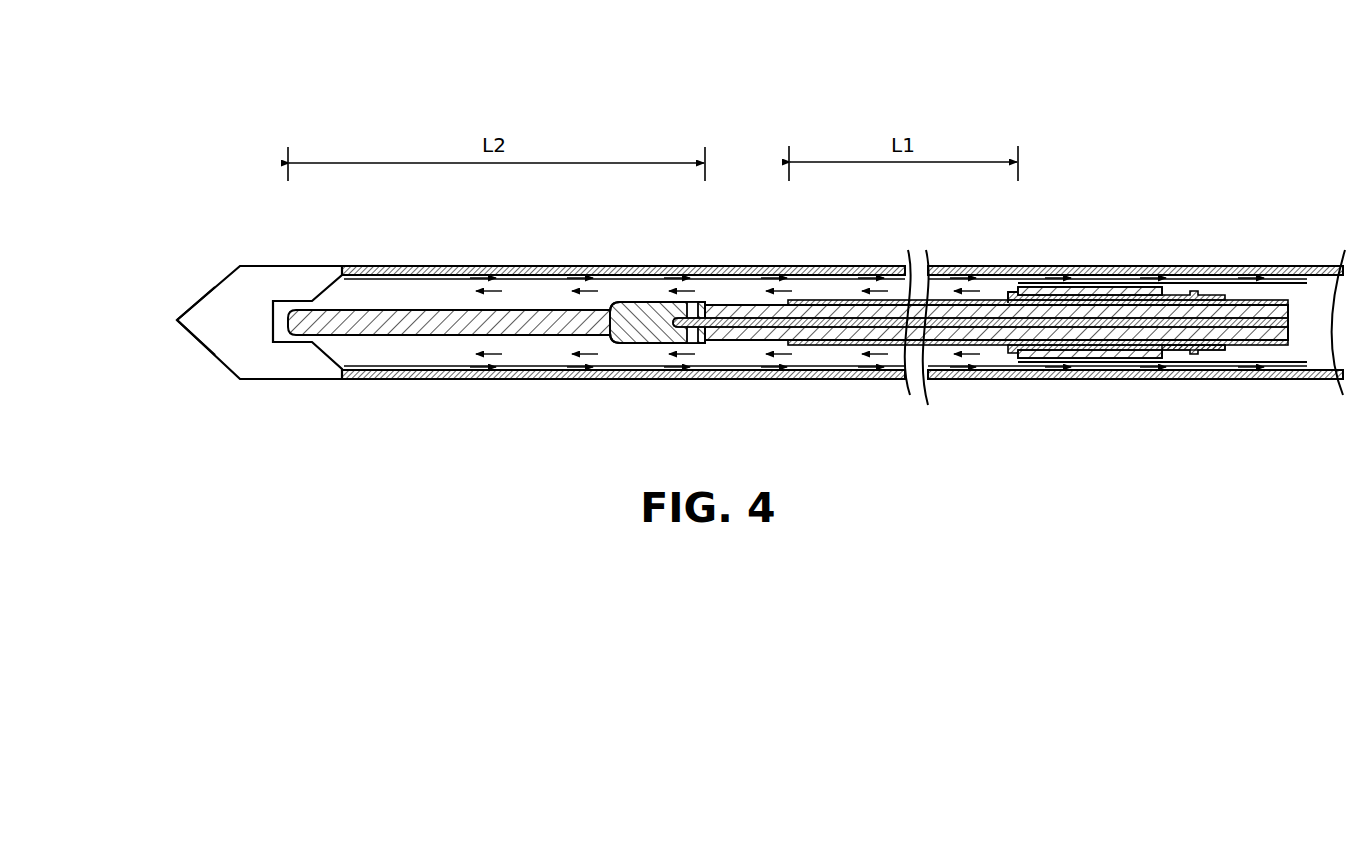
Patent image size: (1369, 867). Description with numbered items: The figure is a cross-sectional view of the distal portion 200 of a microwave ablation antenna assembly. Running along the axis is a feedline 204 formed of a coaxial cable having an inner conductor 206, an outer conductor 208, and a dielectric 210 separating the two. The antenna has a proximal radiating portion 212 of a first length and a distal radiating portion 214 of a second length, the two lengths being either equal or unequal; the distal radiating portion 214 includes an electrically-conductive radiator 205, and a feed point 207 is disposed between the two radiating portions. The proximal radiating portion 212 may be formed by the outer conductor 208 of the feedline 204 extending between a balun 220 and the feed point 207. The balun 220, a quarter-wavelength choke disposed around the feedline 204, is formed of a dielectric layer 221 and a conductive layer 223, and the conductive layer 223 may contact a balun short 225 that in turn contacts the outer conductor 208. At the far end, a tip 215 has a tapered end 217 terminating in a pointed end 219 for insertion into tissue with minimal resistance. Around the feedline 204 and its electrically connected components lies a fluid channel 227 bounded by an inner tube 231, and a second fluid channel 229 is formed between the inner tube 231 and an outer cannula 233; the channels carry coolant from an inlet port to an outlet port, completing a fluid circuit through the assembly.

The distal portion 200 is at (1118, 146).
The feedline 204 is at (1278, 296).
The electrically-conductive radiator 205 is at (385, 336).
The inner conductor 206 is at (830, 300).
The feed point 207 is at (727, 295).
The outer conductor 208 is at (810, 346).
The dielectric 210 is at (730, 344).
The proximal radiating portion 212 is at (925, 395).
The distal radiating portion 214 is at (572, 382).
The tip 215 is at (212, 333).
The tapered end 217 is at (204, 263).
The pointed end 219 is at (177, 321).
The balun 220 is at (1043, 311).
The dielectric layer 221 is at (1010, 295).
The conductive layer 223 is at (1113, 281).
The balun short 225 is at (1144, 285).
The fluid channel 227 is at (993, 360).
The fluid channel 229 is at (1195, 381).
The inner tube 231 is at (1087, 368).
The outer cannula 233 is at (1270, 380).